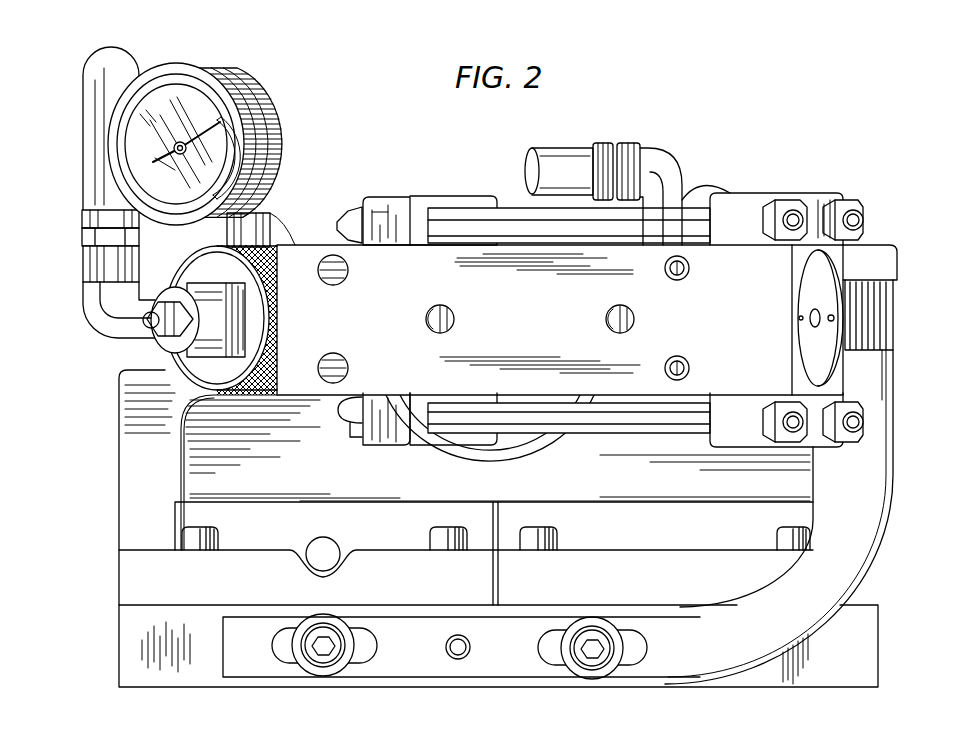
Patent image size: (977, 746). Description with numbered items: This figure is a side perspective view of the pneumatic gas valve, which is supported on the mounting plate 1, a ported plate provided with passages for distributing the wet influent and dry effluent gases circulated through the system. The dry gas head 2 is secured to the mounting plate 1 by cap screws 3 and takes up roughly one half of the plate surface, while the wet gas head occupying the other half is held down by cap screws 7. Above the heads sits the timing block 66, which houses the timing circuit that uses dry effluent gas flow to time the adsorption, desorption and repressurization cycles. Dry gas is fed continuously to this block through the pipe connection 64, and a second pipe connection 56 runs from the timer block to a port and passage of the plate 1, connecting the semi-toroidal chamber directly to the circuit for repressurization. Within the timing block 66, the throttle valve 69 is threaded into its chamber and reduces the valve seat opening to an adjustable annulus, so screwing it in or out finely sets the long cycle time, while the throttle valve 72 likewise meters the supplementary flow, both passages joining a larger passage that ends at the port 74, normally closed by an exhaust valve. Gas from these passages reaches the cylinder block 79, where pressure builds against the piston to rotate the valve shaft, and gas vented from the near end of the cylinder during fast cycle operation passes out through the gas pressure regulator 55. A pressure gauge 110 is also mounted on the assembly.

The mounting plate 1 is at (196, 681).
The dry gas head 2 is at (374, 555).
The cap screws 3 is at (73, 318).
The cap screws 7 is at (548, 540).
The gas pressure regulator 55 is at (162, 332).
The pipe connection 56 is at (557, 158).
The pipe connection 64 is at (88, 184).
The timing block 66 is at (380, 257).
The throttle valve 69 is at (426, 318).
The throttle valve 72 is at (606, 318).
The port 74 is at (848, 362).
The cylinder block 79 is at (765, 204).
The pressure gauge 110 is at (214, 70).